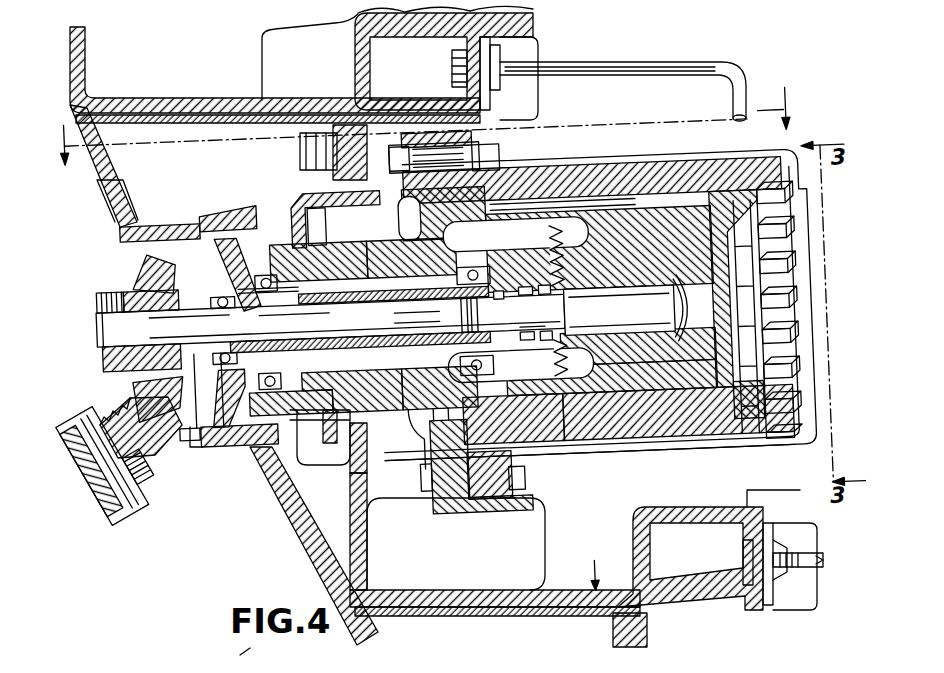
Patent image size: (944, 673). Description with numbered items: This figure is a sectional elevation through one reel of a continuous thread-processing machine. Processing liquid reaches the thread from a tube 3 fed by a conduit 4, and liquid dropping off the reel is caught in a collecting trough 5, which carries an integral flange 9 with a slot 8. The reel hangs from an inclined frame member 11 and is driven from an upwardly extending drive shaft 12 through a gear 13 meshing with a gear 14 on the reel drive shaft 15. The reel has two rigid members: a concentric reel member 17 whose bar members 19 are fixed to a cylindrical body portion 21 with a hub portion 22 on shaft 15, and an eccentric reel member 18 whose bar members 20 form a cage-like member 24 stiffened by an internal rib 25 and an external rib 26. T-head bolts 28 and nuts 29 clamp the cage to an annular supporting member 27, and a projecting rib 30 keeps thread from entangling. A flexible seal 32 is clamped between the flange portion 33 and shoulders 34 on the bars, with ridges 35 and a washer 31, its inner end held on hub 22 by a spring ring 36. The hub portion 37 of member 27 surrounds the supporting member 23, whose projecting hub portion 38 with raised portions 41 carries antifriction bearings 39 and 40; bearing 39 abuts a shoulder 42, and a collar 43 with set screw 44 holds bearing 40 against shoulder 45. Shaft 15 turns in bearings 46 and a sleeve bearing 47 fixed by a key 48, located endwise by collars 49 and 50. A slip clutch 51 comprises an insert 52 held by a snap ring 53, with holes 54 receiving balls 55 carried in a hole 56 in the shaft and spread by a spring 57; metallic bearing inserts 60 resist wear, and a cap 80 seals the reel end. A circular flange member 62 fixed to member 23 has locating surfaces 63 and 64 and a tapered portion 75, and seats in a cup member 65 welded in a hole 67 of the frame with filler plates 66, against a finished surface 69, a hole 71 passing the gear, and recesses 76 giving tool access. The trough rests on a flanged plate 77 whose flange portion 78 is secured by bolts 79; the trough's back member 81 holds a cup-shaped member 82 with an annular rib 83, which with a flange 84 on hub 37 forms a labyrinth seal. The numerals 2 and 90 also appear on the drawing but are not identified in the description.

The motor casing 2 is at (698, 452).
The tube 3 is at (660, 65).
The conduit 4 is at (400, 87).
The collecting trough 5 is at (443, 344).
The slot 8 is at (533, 60).
The flange 9 is at (530, 90).
The inclined frame member 11 is at (300, 530).
The drive shaft 12 is at (140, 498).
The gear 13 is at (186, 412).
The gear 14 is at (102, 360).
The reel drive shaft 15 is at (348, 300).
The concentric reel member 17 is at (700, 172).
The eccentric reel member 18 is at (738, 172).
The bar members 19 is at (790, 322).
The bar members 20 is at (612, 172).
The body portion 21 is at (636, 236).
The hub portion 22 is at (608, 352).
The supporting member 23 is at (372, 272).
The cage-like member 24 is at (660, 180).
The internal annular reinforcing rib 25 is at (740, 306).
The external annular rib 26 is at (481, 123).
The annular supporting member 27 is at (427, 142).
The T-head bolts 28 is at (506, 165).
The nuts 29 is at (403, 228).
The projecting rib 30 is at (503, 516).
The annular ring or washer 31 is at (500, 434).
The flexible seal 32 is at (575, 388).
The flange portion 33 is at (428, 432).
The shoulders 34 is at (486, 182).
The annular ridges 35 is at (489, 471).
The spring ring 36 is at (516, 245).
The hub portion 37 is at (335, 220).
The hub portion 38 is at (330, 372).
The antifriction bearing 39 is at (277, 262).
The antifriction bearing 40 is at (411, 258).
The raised portions 41 is at (316, 300).
The shoulder 42 is at (291, 393).
The collar 43 is at (488, 281).
The set screw 44 is at (490, 378).
The shoulder 45 is at (448, 372).
The antifriction bearings 46 is at (268, 300).
The bearing 47 is at (482, 340).
The key 48 is at (418, 318).
The collar 49 is at (521, 360).
The collar 50 is at (222, 303).
The slip clutch 51 is at (603, 296).
The metallic insert 52 is at (499, 302).
The snap ring 53 is at (570, 280).
The holes 54 is at (615, 365).
The balls 55 is at (585, 344).
The diametrical hole 56 is at (556, 280).
The spring 57 is at (535, 324).
The metallic bearing inserts 60 is at (620, 310).
The circular flange member 62 is at (290, 234).
The locating surface 63 is at (214, 422).
The locating surface 64 is at (190, 435).
The cup member 65 is at (232, 206).
The filler plates 66 is at (122, 224).
The hole 67 is at (133, 225).
The surface 69 is at (205, 216).
The hole 71 is at (195, 420).
The tapered portion 75 is at (250, 440).
The recesses 76 is at (235, 660).
The flanged plates 77 is at (197, 127).
The flange portion 78 is at (333, 168).
The bolts 79 is at (300, 150).
The cap 80 is at (682, 300).
The back member 81 is at (369, 528).
The cup-shaped member 82 is at (342, 473).
The annular rib 83 is at (325, 468).
The flange 84 is at (345, 426).
The gear cone 90 is at (135, 258).